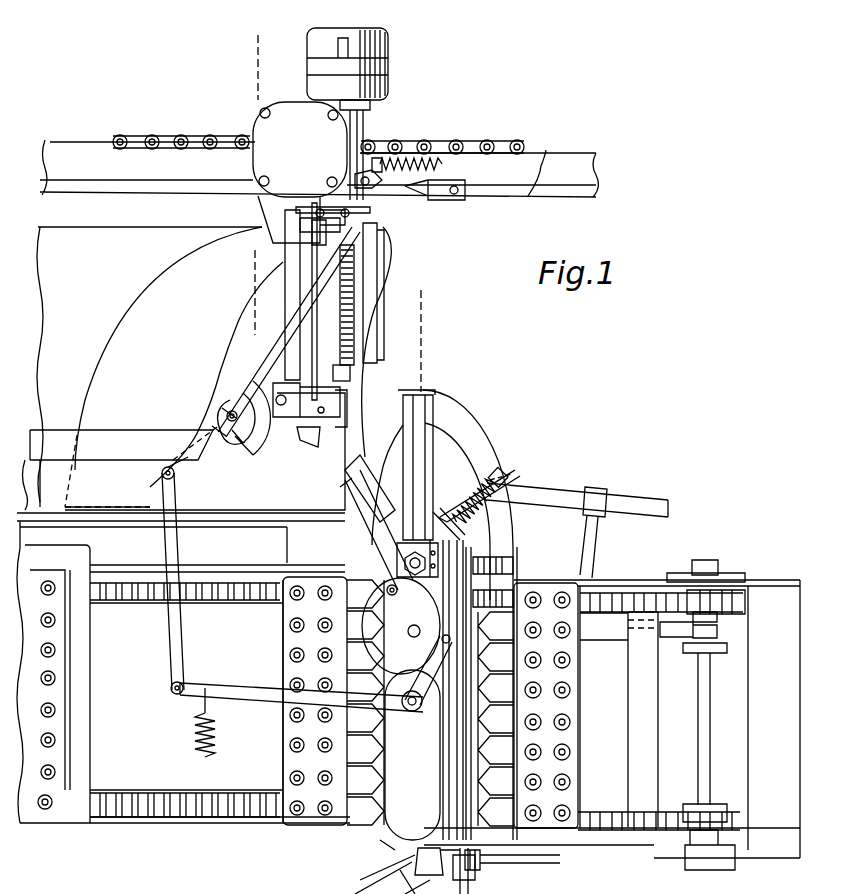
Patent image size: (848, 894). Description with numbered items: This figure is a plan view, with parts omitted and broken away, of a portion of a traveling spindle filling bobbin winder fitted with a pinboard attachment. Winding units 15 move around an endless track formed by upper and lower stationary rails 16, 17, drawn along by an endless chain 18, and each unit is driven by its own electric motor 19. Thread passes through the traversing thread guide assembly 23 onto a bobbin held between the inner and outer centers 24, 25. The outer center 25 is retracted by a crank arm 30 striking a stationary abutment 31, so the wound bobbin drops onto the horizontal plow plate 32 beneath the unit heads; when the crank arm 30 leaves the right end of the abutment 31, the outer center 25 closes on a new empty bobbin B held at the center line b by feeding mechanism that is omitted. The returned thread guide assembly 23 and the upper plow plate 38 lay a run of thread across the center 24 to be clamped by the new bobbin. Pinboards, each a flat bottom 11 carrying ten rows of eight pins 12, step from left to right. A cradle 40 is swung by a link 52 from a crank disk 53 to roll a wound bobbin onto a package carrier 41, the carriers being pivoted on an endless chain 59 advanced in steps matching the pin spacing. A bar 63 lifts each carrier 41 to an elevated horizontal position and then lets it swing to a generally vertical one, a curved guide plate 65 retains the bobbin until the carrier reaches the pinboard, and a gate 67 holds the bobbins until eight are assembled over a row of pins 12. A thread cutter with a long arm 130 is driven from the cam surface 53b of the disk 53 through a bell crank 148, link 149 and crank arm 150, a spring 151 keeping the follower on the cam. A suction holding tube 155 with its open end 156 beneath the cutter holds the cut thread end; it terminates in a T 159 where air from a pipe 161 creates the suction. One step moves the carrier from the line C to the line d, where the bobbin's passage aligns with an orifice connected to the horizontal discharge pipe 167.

The flat bottom 11 is at (572, 684).
The pins 12 is at (292, 748).
The winding units 15 is at (301, 124).
The upper stationary rail 16 is at (540, 160).
The lower stationary rail 17 is at (596, 176).
The endless chain 18 is at (478, 150).
The electric motor 19 is at (360, 44).
The traversing thread guide assembly 23 is at (302, 235).
The inner center 24 is at (300, 172).
The outer center 25 is at (352, 373).
The crank arm 30 is at (304, 444).
The stationary abutment 31 is at (50, 432).
The plow plate 32 is at (54, 232).
The upper plow plate 38 is at (148, 270).
The cradle 40 is at (372, 306).
The package carriers 41 is at (430, 407).
The link 52 is at (352, 534).
The crank disk 53 is at (401, 626).
The cam surface 53b is at (308, 670).
The endless chain 59 is at (440, 730).
The bar 63 is at (455, 430).
The curved guide plate 65 is at (482, 442).
The gate 67 is at (502, 782).
The long arm 130 is at (322, 286).
The bell crank 148 is at (434, 704).
The link 149 is at (166, 549).
The crank arm 150 is at (250, 468).
The spring 151 is at (193, 733).
The suction holding tube 155 is at (490, 542).
The open end 156 is at (470, 492).
The T 159 is at (466, 872).
The pipe 161 is at (516, 858).
The horizontal discharge pipe 167 is at (600, 492).
The line b— b is at (253, 179).
The new empty bobbin B is at (355, 310).
The line c C is at (425, 312).
The line d is at (497, 500).